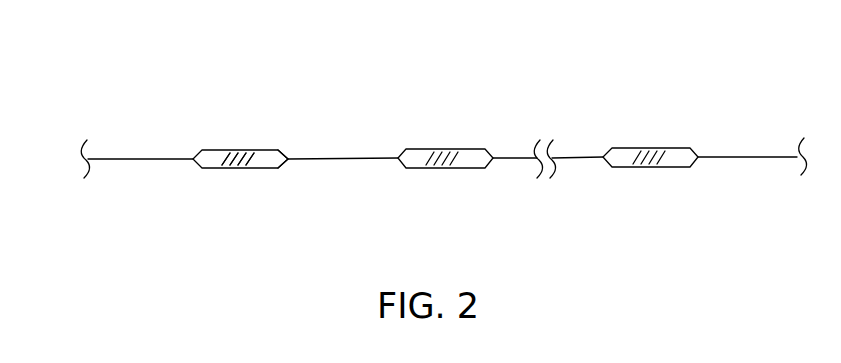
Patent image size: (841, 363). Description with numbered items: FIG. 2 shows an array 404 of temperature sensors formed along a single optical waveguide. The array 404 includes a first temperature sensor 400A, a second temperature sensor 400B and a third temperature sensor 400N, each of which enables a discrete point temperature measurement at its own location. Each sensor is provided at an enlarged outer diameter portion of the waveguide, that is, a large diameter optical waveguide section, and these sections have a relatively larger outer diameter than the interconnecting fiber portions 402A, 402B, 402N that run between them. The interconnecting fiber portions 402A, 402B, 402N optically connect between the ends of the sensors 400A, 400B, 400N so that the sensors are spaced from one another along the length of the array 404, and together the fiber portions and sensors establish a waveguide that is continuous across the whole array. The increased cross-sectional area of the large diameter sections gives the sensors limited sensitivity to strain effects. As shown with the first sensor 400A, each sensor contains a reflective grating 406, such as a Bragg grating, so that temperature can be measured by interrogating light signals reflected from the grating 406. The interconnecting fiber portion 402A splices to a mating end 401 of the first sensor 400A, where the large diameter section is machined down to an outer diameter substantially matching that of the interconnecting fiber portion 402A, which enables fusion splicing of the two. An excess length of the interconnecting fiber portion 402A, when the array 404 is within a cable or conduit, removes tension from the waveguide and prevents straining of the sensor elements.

The array 404 is at (594, 97).
The first temperature sensor 400A is at (260, 150).
The second temperature sensor 400B is at (445, 149).
The third temperature sensor 400N is at (660, 148).
The mating end 401 is at (285, 168).
The reflective grating 406 is at (227, 168).
The interconnecting fiber portion 402A is at (362, 158).
The interconnecting fiber portion 402B is at (513, 158).
The interconnecting fiber portion 402N is at (748, 157).